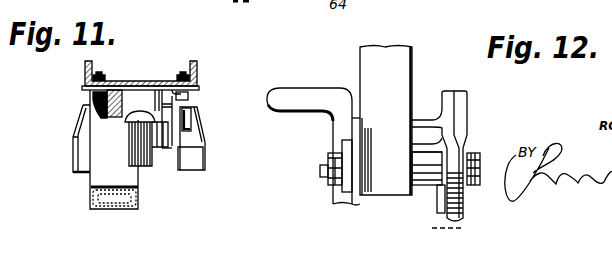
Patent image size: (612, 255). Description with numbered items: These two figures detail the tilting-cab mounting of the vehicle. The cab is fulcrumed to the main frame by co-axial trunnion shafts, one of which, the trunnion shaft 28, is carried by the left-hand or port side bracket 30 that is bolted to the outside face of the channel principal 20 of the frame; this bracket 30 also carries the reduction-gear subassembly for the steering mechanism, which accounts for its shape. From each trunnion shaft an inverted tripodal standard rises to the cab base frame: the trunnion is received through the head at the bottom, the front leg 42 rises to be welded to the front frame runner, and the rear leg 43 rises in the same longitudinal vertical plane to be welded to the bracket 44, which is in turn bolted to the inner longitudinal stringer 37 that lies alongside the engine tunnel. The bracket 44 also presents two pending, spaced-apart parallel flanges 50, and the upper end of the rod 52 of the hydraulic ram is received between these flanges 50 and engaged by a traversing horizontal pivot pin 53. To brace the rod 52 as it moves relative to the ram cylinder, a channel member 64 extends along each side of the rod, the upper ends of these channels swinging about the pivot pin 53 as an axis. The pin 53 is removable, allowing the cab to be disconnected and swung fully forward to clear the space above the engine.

In FIG. 12, the channel principal 20 is at (309, 96).
In FIG. 12, the trunnion shaft 28 is at (481, 166).
In FIG. 12, the bracket 30 is at (352, 132).
In FIG. 11, the inner longitudinal stringer 37 is at (197, 62).
In FIG. 12, the front leg 42 is at (372, 61).
In FIG. 11, the rear leg 43 is at (93, 176).
In FIG. 11, the bracket 44 is at (200, 89).
In FIG. 11, the flange 50 is at (163, 148).
In FIG. 11, the rod 52 is at (143, 117).
In FIG. 11, the pivot pin 53 is at (202, 129).
In FIG. 11, the channel member 64 is at (74, 130).